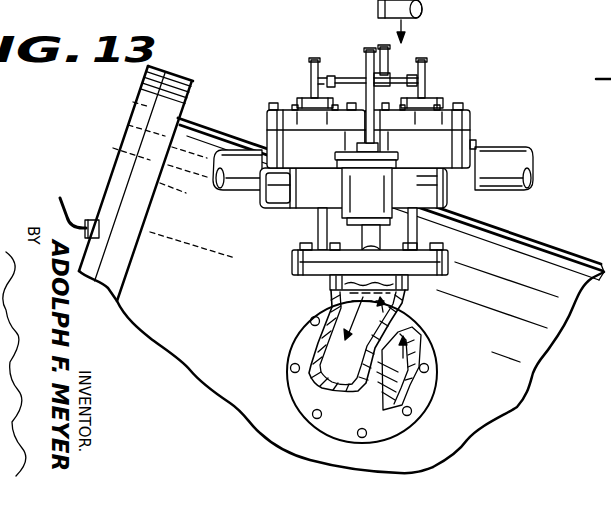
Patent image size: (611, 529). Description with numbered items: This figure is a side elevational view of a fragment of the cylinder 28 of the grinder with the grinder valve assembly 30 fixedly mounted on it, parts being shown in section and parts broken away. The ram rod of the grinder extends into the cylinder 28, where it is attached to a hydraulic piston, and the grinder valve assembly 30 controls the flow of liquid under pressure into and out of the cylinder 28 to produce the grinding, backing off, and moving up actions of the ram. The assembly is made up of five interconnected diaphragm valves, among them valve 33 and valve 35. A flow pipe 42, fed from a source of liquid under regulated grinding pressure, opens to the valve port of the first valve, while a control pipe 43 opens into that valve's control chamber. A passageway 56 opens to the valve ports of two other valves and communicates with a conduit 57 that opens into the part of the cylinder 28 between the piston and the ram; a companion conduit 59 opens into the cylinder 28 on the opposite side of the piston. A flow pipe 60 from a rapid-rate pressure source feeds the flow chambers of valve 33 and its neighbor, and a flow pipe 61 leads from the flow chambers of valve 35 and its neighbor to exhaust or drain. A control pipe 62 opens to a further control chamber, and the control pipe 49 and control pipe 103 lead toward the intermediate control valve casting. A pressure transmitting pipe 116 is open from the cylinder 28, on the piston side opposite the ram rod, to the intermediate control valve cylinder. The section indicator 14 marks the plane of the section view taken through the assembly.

The section line 14- 14 is at (302, 71).
The cylinder 28 is at (528, 250).
The grinder valve assembly 30 is at (470, 125).
The valve 33 is at (476, 145).
The valve 35 is at (267, 125).
The flow pipe 42 is at (368, 238).
The control pipe 43 is at (365, 57).
The control pipe 49 is at (414, 74).
The passageway 56 is at (428, 83).
The conduit 57 is at (418, 343).
The conduit 59 is at (335, 355).
The flow pipe 60 is at (512, 167).
The flow pipe 61 is at (255, 182).
The control pipe 62 is at (334, 53).
The control pipe 103 is at (424, 4).
The pressure transmitting pipe 116 is at (70, 211).